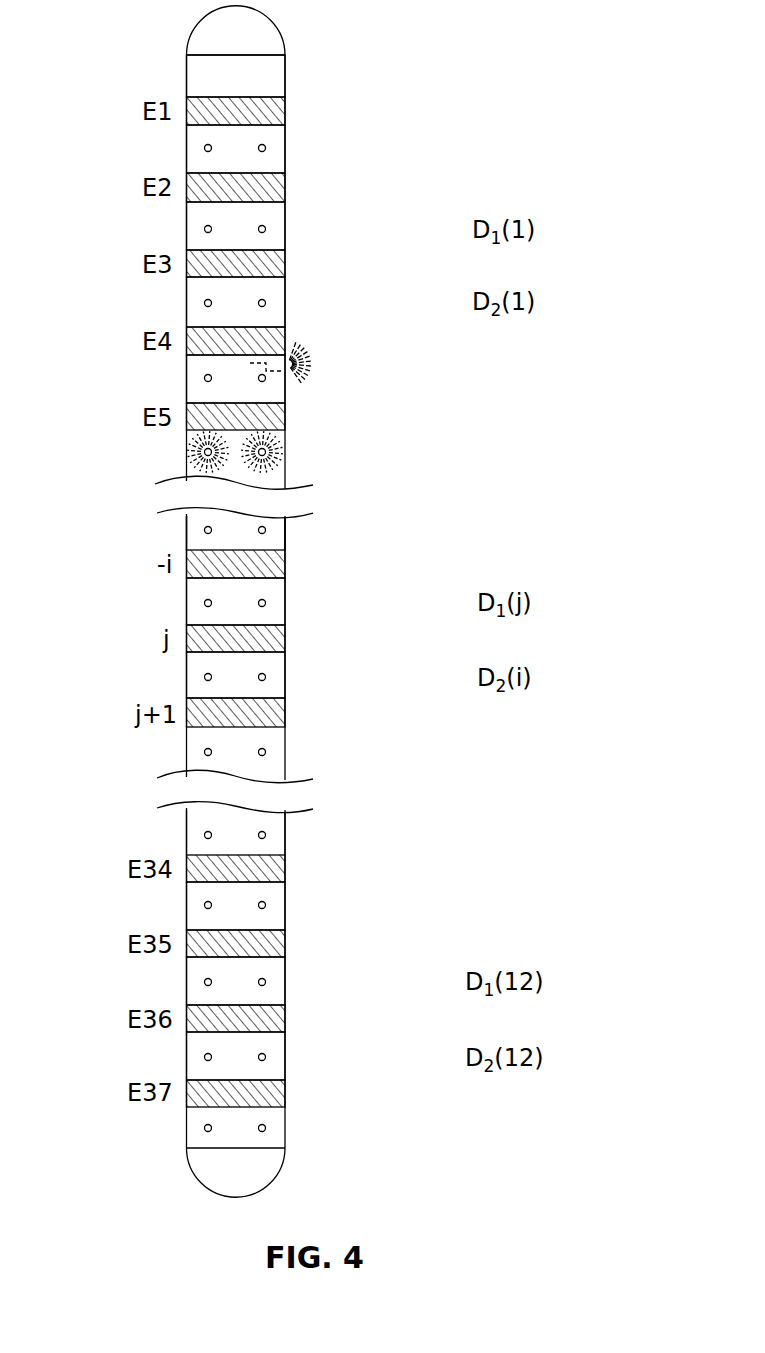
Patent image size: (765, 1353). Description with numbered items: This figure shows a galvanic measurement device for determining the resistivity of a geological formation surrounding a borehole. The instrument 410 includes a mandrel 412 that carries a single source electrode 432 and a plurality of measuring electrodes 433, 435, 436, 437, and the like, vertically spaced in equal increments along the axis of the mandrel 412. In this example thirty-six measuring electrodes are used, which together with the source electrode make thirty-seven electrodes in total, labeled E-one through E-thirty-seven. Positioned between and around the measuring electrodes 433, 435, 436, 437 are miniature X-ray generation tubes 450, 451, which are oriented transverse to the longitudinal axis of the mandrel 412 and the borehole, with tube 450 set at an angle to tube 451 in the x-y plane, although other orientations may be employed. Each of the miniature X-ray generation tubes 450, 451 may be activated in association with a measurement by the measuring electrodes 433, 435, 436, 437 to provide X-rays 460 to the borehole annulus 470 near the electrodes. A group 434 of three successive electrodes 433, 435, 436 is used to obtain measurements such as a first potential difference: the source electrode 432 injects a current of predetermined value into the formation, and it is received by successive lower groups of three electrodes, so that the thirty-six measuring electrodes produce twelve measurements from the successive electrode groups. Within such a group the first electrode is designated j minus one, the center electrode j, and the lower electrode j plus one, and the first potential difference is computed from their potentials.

The instrument 410 is at (372, 92).
The mandrel 412 is at (286, 66).
The source electrode 432 is at (194, 855).
The measuring electrode 433 is at (194, 930).
The group of three successive electrodes 434 is at (286, 118).
The measuring electrode 435 is at (194, 1005).
The measuring electrode 436 is at (194, 1080).
The measuring electrode 437 is at (194, 403).
The miniature X-ray generation tube 450 is at (363, 410).
The miniature X-ray generation tube 451 is at (270, 358).
The X-rays 460 is at (287, 455).
The borehole annulus 470 is at (320, 530).